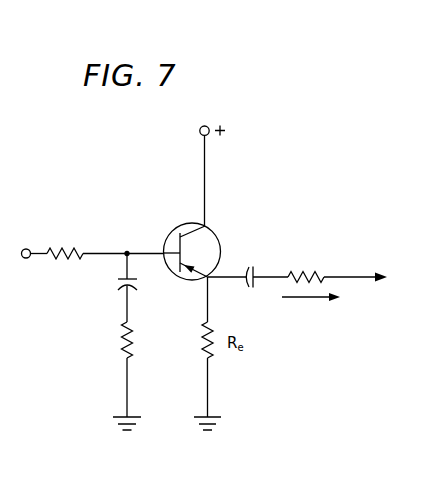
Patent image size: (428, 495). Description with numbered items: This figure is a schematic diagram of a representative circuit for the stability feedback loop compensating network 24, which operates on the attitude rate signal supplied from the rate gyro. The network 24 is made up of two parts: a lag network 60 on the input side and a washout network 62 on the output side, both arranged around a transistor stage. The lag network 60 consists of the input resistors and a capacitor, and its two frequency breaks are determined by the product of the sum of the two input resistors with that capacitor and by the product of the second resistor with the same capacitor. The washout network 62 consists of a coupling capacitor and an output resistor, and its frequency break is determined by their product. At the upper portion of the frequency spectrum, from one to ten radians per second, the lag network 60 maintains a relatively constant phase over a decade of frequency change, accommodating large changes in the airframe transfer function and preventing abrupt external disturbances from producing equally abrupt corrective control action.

The network 24 is at (224, 207).
The lag network 60 is at (71, 324).
The washout network 62 is at (289, 235).